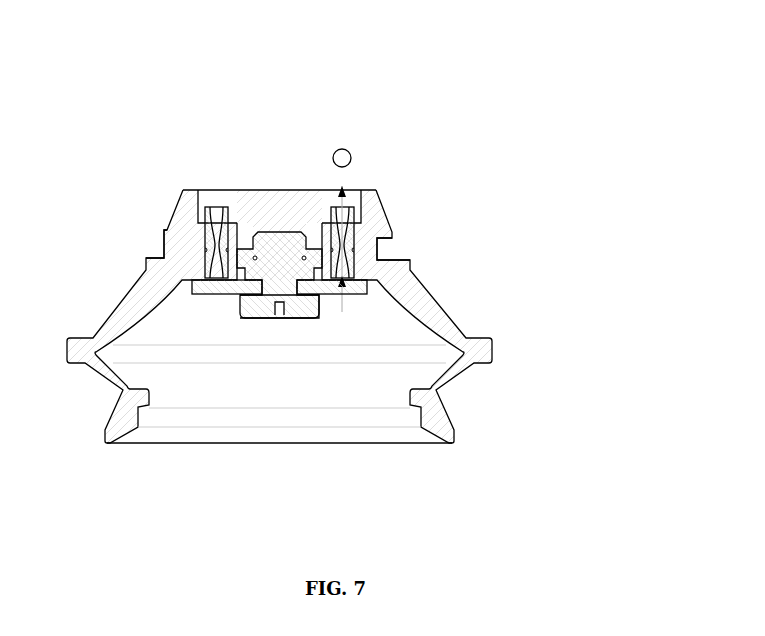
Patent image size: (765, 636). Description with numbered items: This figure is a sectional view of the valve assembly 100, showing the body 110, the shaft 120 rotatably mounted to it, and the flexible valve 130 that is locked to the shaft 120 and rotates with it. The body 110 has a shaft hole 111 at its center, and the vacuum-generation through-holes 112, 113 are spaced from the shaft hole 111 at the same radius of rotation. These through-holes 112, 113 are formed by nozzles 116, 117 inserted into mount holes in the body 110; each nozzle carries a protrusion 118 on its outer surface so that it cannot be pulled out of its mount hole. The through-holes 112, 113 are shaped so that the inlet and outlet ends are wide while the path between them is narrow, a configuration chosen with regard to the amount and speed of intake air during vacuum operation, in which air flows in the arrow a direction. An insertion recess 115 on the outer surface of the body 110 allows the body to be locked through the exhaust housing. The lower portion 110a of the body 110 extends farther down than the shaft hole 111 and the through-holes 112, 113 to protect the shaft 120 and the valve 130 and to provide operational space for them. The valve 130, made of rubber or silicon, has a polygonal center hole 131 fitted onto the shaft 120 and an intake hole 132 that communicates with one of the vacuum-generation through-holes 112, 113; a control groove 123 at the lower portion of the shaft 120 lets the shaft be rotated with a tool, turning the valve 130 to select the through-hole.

The valve assembly 100 is at (407, 113).
The body 110 is at (497, 330).
The lower portion of the body 110a is at (403, 447).
The shaft hole 111 is at (250, 200).
The vacuum-generation through-hole 112 is at (213, 200).
The vacuum-generation through-hole 113 is at (337, 200).
The insertion recess 115 is at (384, 248).
The nozzle 116 is at (352, 233).
The nozzle 117 is at (200, 233).
The protrusion 118 is at (203, 255).
The shaft 120 is at (235, 326).
The control groove 123 is at (282, 316).
The flexible valve 130 is at (322, 300).
The center hole 131 is at (270, 303).
The intake hole 132 is at (370, 298).